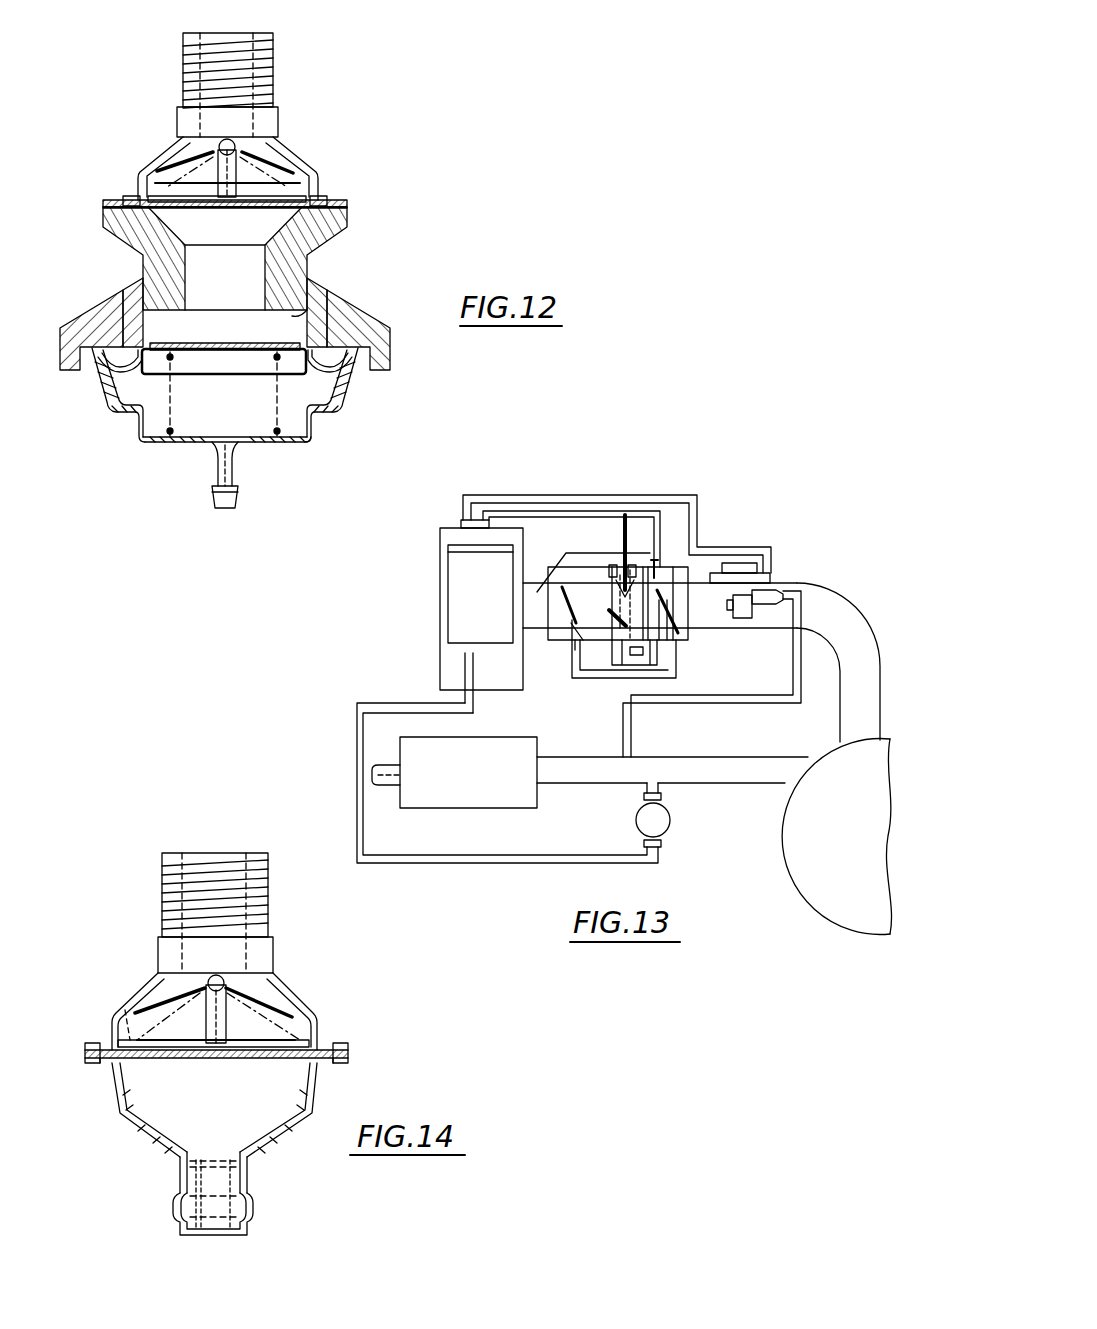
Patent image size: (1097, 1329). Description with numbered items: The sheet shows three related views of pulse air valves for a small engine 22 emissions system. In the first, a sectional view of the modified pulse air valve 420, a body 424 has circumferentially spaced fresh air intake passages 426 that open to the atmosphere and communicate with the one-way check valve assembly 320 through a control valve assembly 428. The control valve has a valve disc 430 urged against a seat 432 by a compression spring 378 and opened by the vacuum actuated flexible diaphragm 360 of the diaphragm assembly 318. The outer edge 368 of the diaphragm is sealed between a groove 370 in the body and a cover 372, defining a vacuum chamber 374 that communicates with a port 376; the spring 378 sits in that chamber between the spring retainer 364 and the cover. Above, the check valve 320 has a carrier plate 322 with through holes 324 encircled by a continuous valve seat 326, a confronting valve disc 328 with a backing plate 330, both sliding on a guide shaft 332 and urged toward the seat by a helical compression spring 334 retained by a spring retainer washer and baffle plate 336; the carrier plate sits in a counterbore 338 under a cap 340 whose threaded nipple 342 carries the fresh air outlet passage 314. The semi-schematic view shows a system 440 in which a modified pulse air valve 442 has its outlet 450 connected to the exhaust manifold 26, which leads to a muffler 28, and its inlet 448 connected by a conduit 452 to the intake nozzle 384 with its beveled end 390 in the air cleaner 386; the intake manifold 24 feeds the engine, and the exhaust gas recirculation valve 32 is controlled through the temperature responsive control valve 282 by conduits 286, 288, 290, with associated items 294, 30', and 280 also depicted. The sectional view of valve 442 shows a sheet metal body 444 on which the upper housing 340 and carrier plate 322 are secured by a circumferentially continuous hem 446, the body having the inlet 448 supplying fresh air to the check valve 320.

In FIG. 12, the fresh air outlet passage 314 is at (240, 60).
In FIG. 12, the threaded nipple 342 is at (183, 60).
In FIG. 12, the guide shaft 332 is at (235, 140).
In FIG. 14, the guide shaft 332 is at (221, 980).
In FIG. 12, the spring retainer washer and baffle plate 336 is at (283, 170).
In FIG. 14, the spring retainer washer and baffle plate 336 is at (270, 1002).
In FIG. 12, the helical compression spring 334 is at (283, 187).
In FIG. 14, the helical compression spring 334 is at (140, 993).
In FIG. 12, the backing plate 330 is at (313, 197).
In FIG. 14, the backing plate 330 is at (273, 1040).
In FIG. 12, the valve disc 328 is at (325, 198).
In FIG. 14, the valve disc 328 is at (313, 1047).
In FIG. 12, the carrier plate 322 is at (328, 210).
In FIG. 14, the carrier plate 322 is at (325, 1078).
In FIG. 12, the valve seat 326 is at (140, 167).
In FIG. 14, the valve seat 326 is at (113, 1082).
In FIG. 12, the counterbore 338 is at (127, 197).
In FIG. 12, the modified pulse air valve 420 is at (90, 210).
In FIG. 12, the one-way check valve assembly 320 is at (183, 217).
In FIG. 14, the one-way check valve assembly 320 is at (270, 1069).
In FIG. 12, the through holes 324 is at (267, 210).
In FIG. 14, the through holes 324 is at (188, 1060).
In FIG. 12, the fresh air intake passages 426 is at (140, 279).
In FIG. 12, the body 424 is at (100, 312).
In FIG. 12, the control valve assembly 428 is at (254, 337).
In FIG. 12, the valve disc 430 is at (217, 344).
In FIG. 12, the seat 432 is at (307, 318).
In FIG. 12, the groove 370 is at (373, 347).
In FIG. 12, the flexible diaphragm 360 is at (348, 383).
In FIG. 12, the outer edge of the diaphragm 368 is at (86, 373).
In FIG. 12, the diaphragm assembly 318 is at (103, 408).
In FIG. 12, the spring retainer 364 is at (263, 368).
In FIG. 12, the compression spring 378 is at (172, 420).
In FIG. 12, the cover 372 is at (322, 441).
In FIG. 12, the vacuum chamber 374 is at (155, 407).
In FIG. 12, the port 376 is at (233, 480).
In FIG. 13, the conduit 290 is at (522, 494).
In FIG. 13, the conduit 288 is at (573, 510).
In FIG. 13, the port 294 is at (649, 516).
In FIG. 13, the temperature responsive control valve 282 is at (462, 522).
In FIG. 13, the conduit 286 is at (618, 528).
In FIG. 13, the air cleaner 386 is at (440, 562).
In FIG. 13, the system 440 is at (412, 598).
In FIG. 13, the exhaust gas recirculation valve 32 is at (770, 573).
In FIG. 13, the intake manifold 24 is at (855, 592).
In FIG. 13, the beveled end 390 is at (468, 653).
In FIG. 13, the intake nozzle 384 is at (458, 678).
In FIG. 13, the valve mechanism 30' is at (612, 630).
In FIG. 13, the sensor valve 280 is at (793, 658).
In FIG. 13, the exhaust manifold 26 is at (731, 756).
In FIG. 13, the muffler 28 is at (480, 787).
In FIG. 13, the modified pulse air valve 442 is at (667, 817).
In FIG. 14, the modified pulse air valve 442 is at (416, 950).
In FIG. 13, the inlet 448 is at (665, 843).
In FIG. 14, the inlet 448 is at (176, 1203).
In FIG. 13, the conduit 452 is at (543, 865).
In FIG. 13, the small engine 22 is at (804, 917).
In FIG. 14, the outlet 450 is at (227, 853).
In FIG. 14, the cap 340 is at (150, 987).
In FIG. 14, the hem 446 is at (340, 1047).
In FIG. 14, the sheet metal body 444 is at (153, 1143).